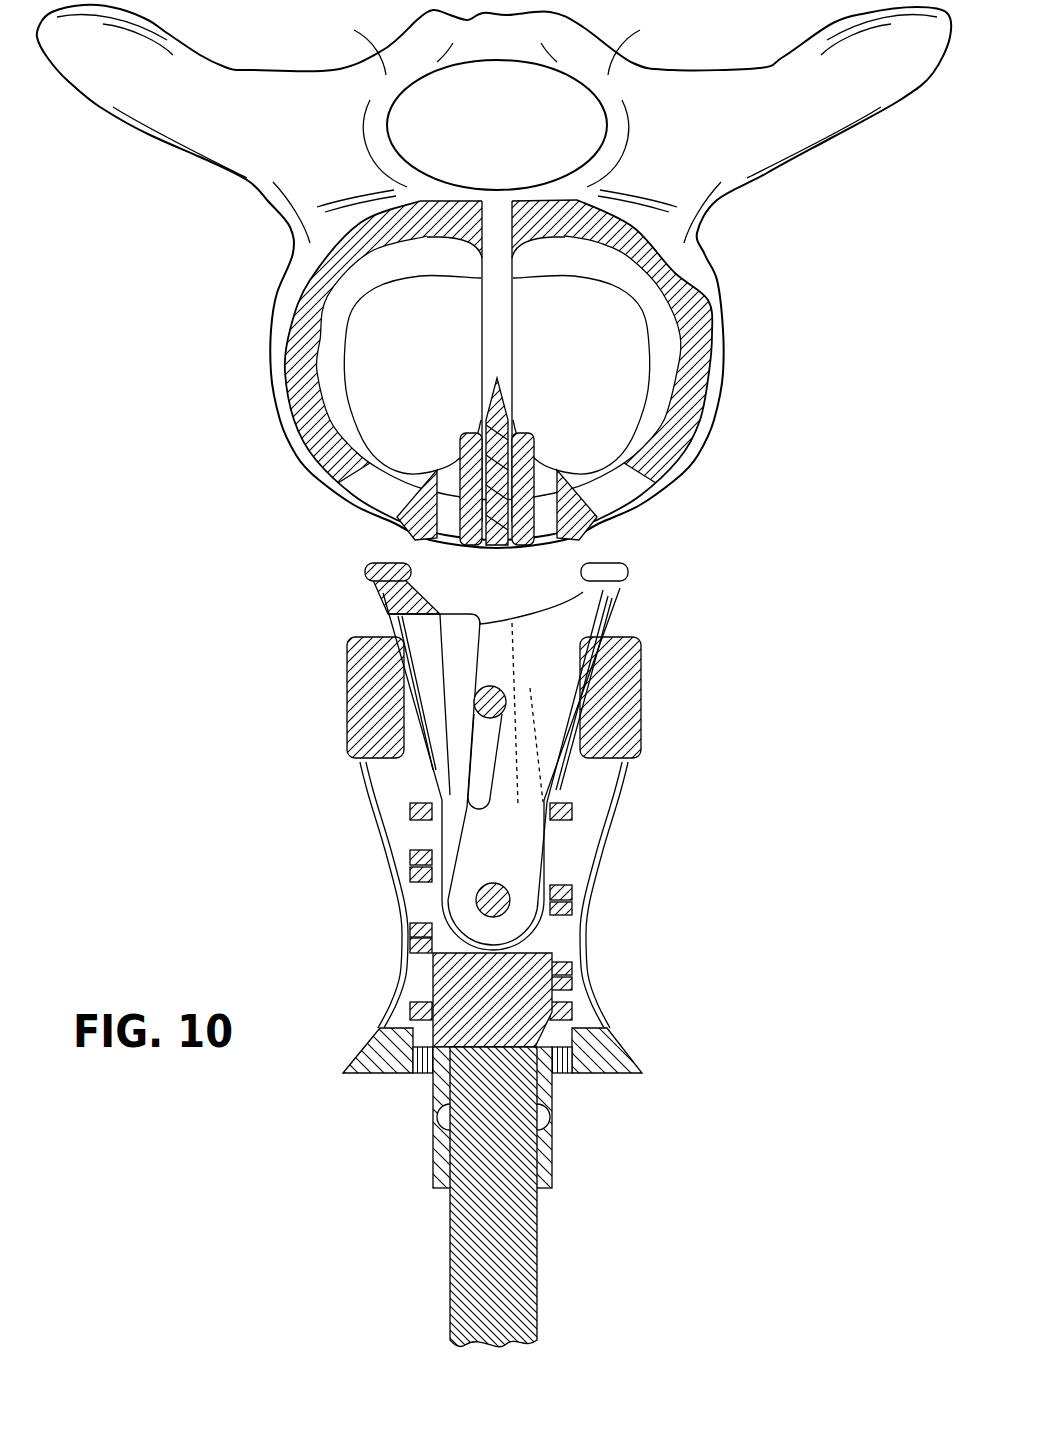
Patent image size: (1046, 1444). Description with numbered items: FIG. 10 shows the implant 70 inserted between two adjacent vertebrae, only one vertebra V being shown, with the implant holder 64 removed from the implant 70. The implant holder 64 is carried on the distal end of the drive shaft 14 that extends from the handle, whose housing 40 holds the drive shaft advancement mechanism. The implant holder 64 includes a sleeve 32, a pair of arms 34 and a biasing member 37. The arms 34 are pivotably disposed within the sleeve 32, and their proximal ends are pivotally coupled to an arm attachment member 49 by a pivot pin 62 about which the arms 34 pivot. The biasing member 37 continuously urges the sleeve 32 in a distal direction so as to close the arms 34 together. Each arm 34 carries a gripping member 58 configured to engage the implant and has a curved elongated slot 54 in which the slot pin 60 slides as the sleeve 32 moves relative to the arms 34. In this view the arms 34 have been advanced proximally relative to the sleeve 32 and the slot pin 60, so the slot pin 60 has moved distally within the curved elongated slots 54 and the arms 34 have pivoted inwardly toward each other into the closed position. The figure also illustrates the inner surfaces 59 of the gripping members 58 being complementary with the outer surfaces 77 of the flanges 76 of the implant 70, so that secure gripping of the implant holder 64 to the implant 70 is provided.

The vertebra V is at (773, 125).
The implant 70 is at (705, 302).
The outer surfaces of the flanges 77 is at (600, 500).
The flanges 76 is at (575, 515).
The inner surfaces of the gripping members 59 is at (583, 587).
The gripping member 58 is at (607, 577).
The arms 34 is at (550, 663).
The slot pin 60 is at (488, 703).
The curved elongated slot 54 is at (512, 742).
The sleeve 32 is at (376, 857).
The biasing member 37 is at (430, 940).
The pivot pin 62 is at (503, 896).
The arm attachment member 49 is at (535, 998).
The housing 40 is at (642, 1039).
The drive shaft 14 is at (537, 1262).
The implant holder 64 is at (833, 880).